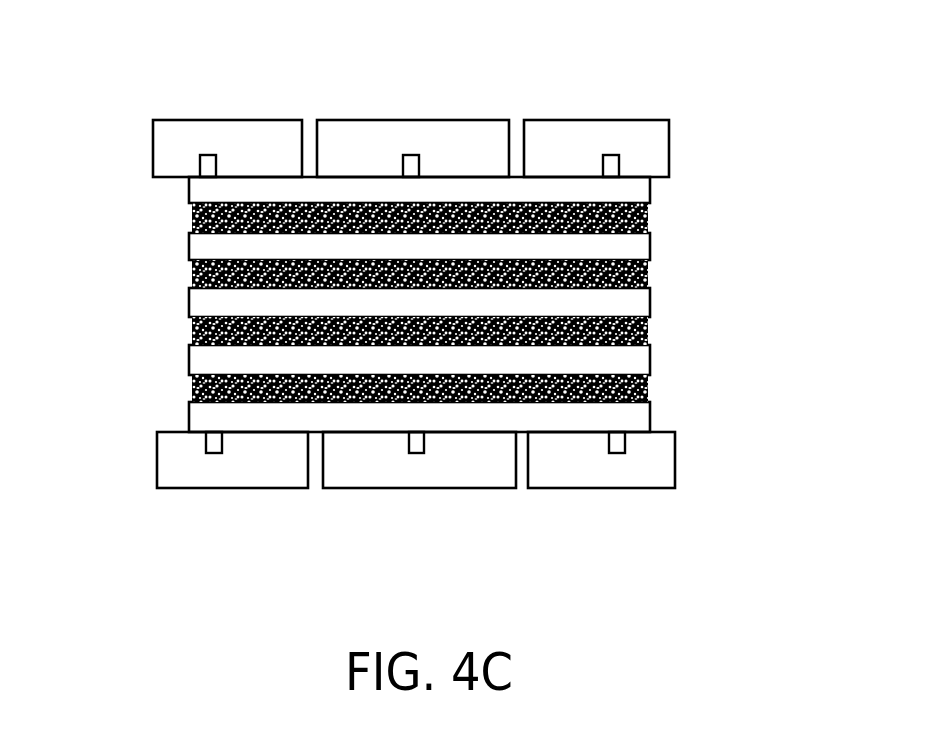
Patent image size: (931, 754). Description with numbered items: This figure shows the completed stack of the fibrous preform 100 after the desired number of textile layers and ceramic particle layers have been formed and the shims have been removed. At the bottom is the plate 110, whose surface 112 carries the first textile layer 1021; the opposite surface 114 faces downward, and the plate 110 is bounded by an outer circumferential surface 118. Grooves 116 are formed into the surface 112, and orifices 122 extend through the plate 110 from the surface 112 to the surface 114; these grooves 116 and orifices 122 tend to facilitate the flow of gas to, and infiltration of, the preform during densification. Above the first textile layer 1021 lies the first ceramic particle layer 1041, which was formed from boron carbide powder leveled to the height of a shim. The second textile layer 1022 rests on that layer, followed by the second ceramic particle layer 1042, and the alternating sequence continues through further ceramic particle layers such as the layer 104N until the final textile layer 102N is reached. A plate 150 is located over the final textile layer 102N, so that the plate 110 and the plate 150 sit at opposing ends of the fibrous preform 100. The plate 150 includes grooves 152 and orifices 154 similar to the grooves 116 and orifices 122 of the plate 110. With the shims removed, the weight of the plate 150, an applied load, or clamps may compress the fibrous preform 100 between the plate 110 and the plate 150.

The fibrous preform 100 is at (436, 300).
The final textile layer 102N is at (637, 190).
The second textile layer 1022 is at (638, 365).
The first textile layer 1021 is at (635, 425).
The ceramic particle layer 104N is at (172, 221).
The second ceramic particle layer 1042 is at (172, 330).
The first ceramic particle layer 1041 is at (172, 393).
The plate 110 is at (183, 468).
The surface 112 is at (172, 432).
The surface 114 is at (633, 488).
The grooves 116 is at (422, 474).
The outer circumferential surface 118 is at (483, 513).
The orifices 122 is at (314, 500).
The plate 150 is at (473, 92).
The grooves 152 is at (208, 140).
The orifices 154 is at (310, 106).